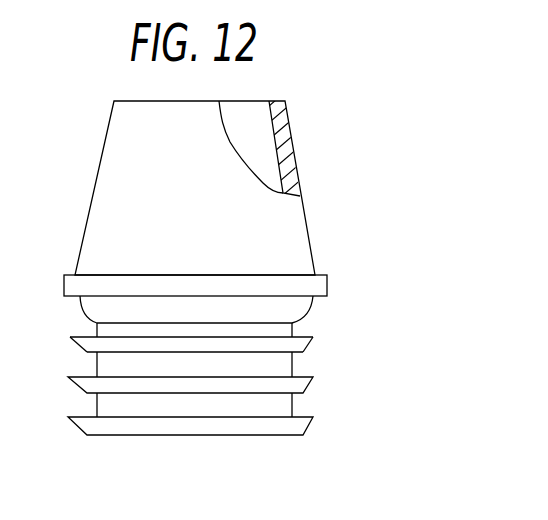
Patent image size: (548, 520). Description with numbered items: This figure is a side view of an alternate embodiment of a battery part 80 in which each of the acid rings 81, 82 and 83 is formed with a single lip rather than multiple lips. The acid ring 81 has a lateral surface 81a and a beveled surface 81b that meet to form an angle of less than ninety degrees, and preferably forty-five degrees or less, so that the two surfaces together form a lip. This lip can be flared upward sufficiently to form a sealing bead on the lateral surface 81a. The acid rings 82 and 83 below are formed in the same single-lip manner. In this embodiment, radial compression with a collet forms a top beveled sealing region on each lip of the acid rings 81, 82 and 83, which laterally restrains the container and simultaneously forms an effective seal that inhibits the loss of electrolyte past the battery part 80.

The battery part 80 is at (275, 233).
The acid ring 81 is at (240, 334).
The lateral surface 81a is at (299, 334).
The beveled surface 81b is at (305, 347).
The acid ring 82 is at (92, 390).
The acid ring 83 is at (88, 430).